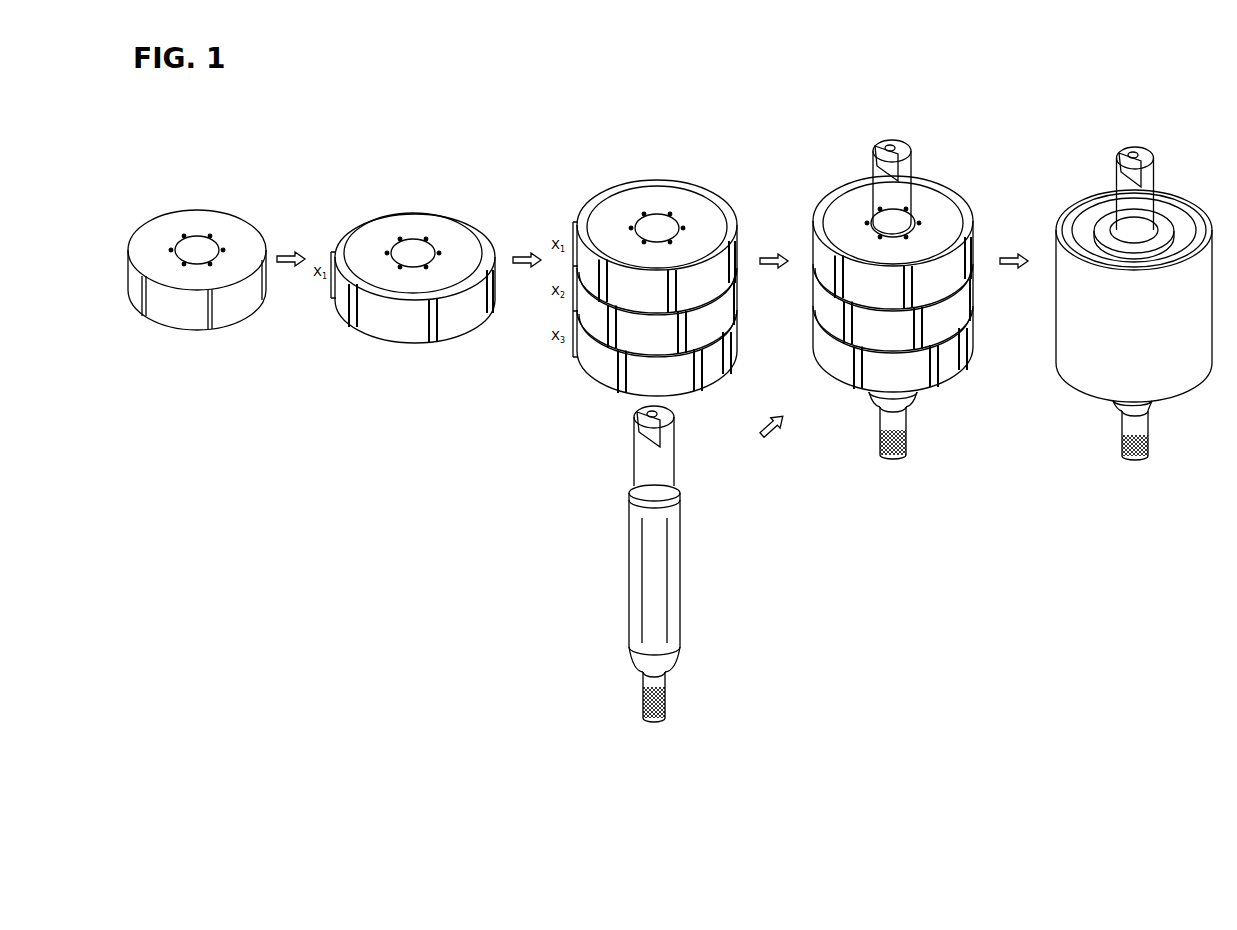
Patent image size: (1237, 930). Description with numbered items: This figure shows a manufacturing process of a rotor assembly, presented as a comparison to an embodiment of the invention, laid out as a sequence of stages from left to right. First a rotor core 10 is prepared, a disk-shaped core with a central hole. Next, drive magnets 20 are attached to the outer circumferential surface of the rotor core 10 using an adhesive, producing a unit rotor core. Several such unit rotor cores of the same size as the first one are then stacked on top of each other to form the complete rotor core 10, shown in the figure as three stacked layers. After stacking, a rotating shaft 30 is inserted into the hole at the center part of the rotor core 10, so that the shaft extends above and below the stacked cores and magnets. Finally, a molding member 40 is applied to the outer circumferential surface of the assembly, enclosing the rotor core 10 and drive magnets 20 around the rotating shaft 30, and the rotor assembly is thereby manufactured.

The rotor core 10 is at (195, 332).
The drive magnets 20 is at (402, 345).
The rotating shaft 30 is at (630, 576).
The molding member 40 is at (1200, 216).